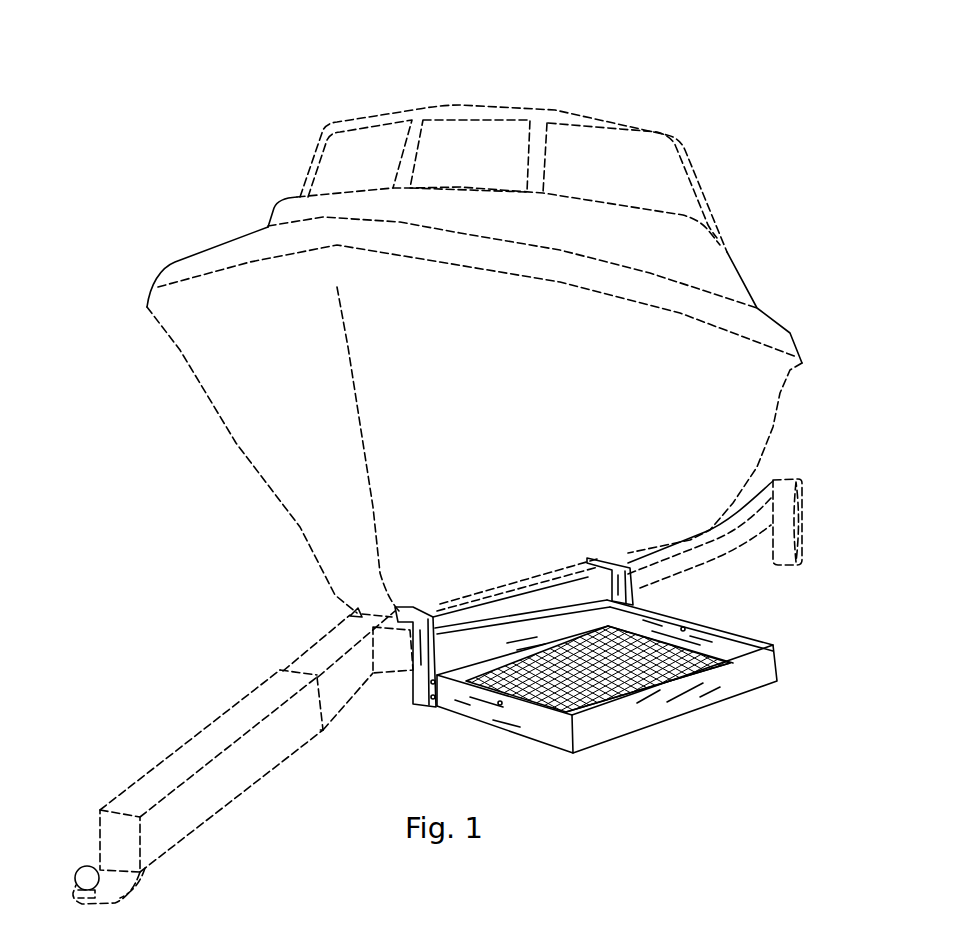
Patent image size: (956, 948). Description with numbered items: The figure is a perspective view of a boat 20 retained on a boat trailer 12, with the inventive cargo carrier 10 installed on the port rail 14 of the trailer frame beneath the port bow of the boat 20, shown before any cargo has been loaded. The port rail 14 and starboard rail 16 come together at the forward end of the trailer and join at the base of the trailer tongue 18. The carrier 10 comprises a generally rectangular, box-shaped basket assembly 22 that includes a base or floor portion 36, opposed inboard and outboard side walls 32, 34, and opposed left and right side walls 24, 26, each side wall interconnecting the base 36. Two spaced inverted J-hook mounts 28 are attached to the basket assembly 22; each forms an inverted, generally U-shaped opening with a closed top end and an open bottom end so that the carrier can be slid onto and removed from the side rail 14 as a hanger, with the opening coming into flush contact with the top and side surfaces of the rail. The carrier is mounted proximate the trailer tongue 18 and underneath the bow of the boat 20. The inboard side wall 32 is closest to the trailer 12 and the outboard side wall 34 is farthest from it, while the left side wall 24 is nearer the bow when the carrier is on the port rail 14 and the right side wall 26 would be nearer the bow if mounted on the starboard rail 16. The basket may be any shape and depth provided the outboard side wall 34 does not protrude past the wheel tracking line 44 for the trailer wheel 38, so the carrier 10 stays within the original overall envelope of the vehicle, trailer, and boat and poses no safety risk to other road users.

The cargo carrier 10 is at (585, 684).
The boat trailer 12 is at (228, 839).
The port rail 14 is at (393, 665).
The starboard rail 16 is at (350, 617).
The trailer tongue 18 is at (310, 657).
The boat 20 is at (651, 97).
The basket assembly 22 is at (758, 673).
The left side wall 24 is at (470, 714).
The right side wall 26 is at (703, 630).
The inverted J-hook mount 28 is at (425, 695).
The inboard side wall 32 is at (478, 677).
The outboard side wall 34 is at (608, 740).
The base or floor portion 36 is at (601, 682).
The trailer wheel 38 is at (797, 479).
The wheel tracking line 44 is at (790, 622).